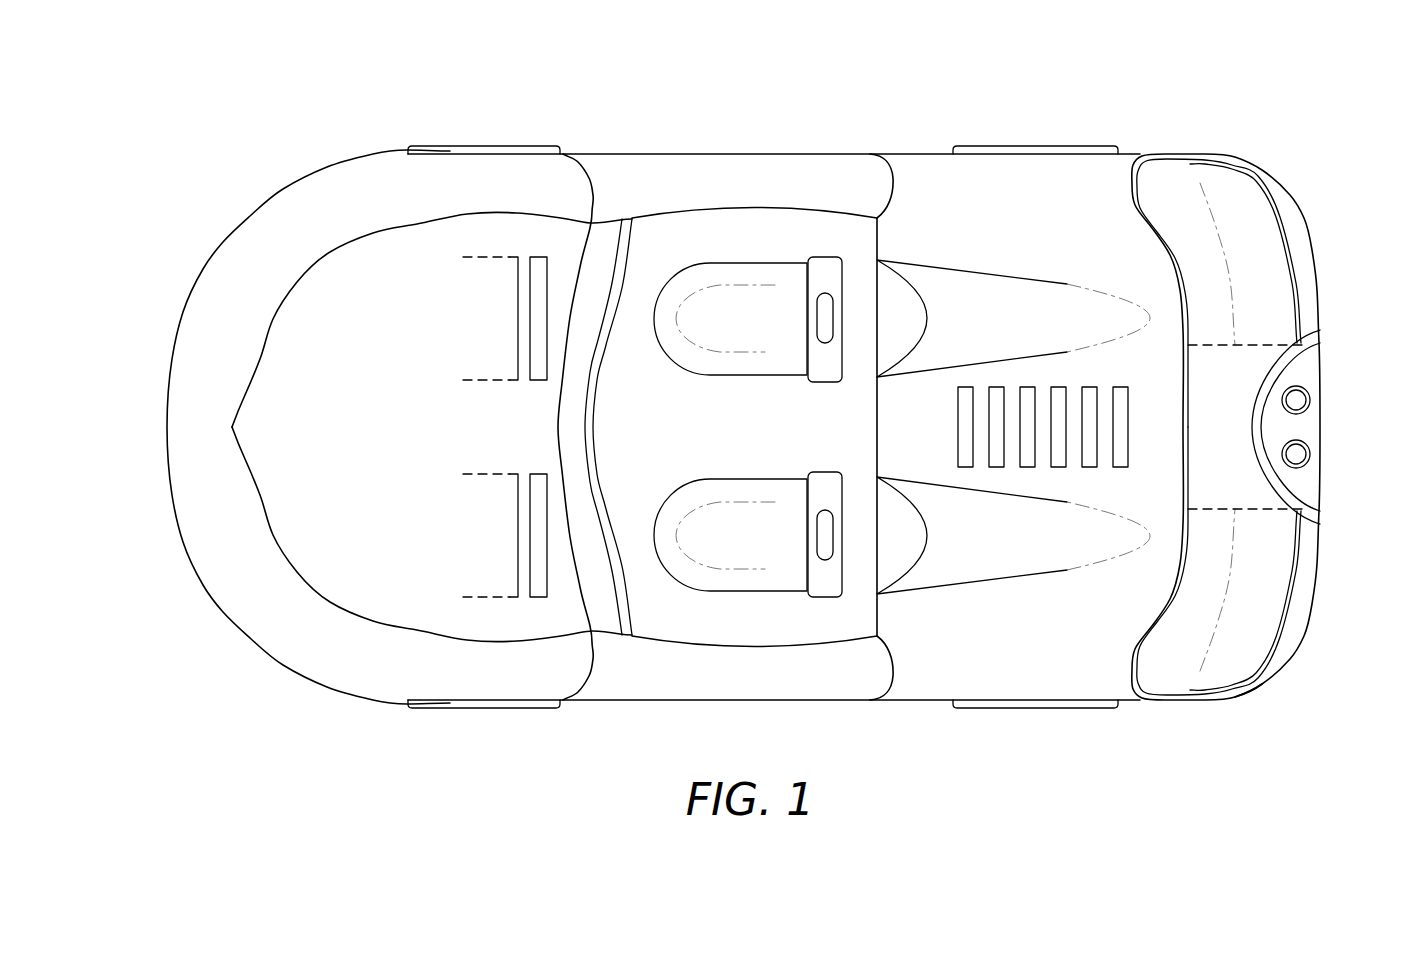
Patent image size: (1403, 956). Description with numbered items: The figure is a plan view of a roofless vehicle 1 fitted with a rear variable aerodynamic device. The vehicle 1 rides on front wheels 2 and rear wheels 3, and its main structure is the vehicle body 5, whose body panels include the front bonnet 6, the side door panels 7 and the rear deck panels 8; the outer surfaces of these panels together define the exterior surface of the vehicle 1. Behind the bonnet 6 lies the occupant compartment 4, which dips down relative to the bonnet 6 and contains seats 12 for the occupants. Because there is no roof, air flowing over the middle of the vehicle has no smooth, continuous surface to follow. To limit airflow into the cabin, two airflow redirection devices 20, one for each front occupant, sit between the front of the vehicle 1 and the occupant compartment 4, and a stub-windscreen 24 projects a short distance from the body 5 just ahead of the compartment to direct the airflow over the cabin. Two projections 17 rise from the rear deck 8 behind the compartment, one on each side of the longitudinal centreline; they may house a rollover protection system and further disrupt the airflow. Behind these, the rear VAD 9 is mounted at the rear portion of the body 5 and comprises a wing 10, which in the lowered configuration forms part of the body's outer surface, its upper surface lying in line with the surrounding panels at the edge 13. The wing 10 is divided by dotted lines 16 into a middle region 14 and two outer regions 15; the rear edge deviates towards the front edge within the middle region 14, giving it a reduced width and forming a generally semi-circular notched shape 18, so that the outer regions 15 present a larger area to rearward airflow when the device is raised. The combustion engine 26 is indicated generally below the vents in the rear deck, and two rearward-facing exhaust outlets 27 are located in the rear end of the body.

The vehicle 1 is at (889, 110).
The front wheels 2 is at (488, 147).
The rear wheels 3 is at (1037, 147).
The occupant compartment 4 is at (805, 225).
The vehicle body 5 is at (220, 630).
The front bonnet 6 is at (178, 425).
The side door panels 7 is at (650, 167).
The rear deck panels 8 is at (1127, 687).
The rear variable aerodynamic device 9 is at (1222, 180).
The wing 10 is at (1245, 670).
The seats 12 is at (742, 275).
The edge 13 is at (1180, 155).
The middle region 14 is at (1208, 438).
The outer regions 15 is at (1263, 230).
The dotted lines 16 is at (1272, 343).
The projections 17 is at (977, 283).
The notched shape 18 is at (1287, 368).
The airflow redirection device 20 is at (484, 310).
The stub-windscreen 24 is at (571, 427).
The combustion engine 26 is at (1028, 397).
The exhaust outlets 27 is at (1303, 402).